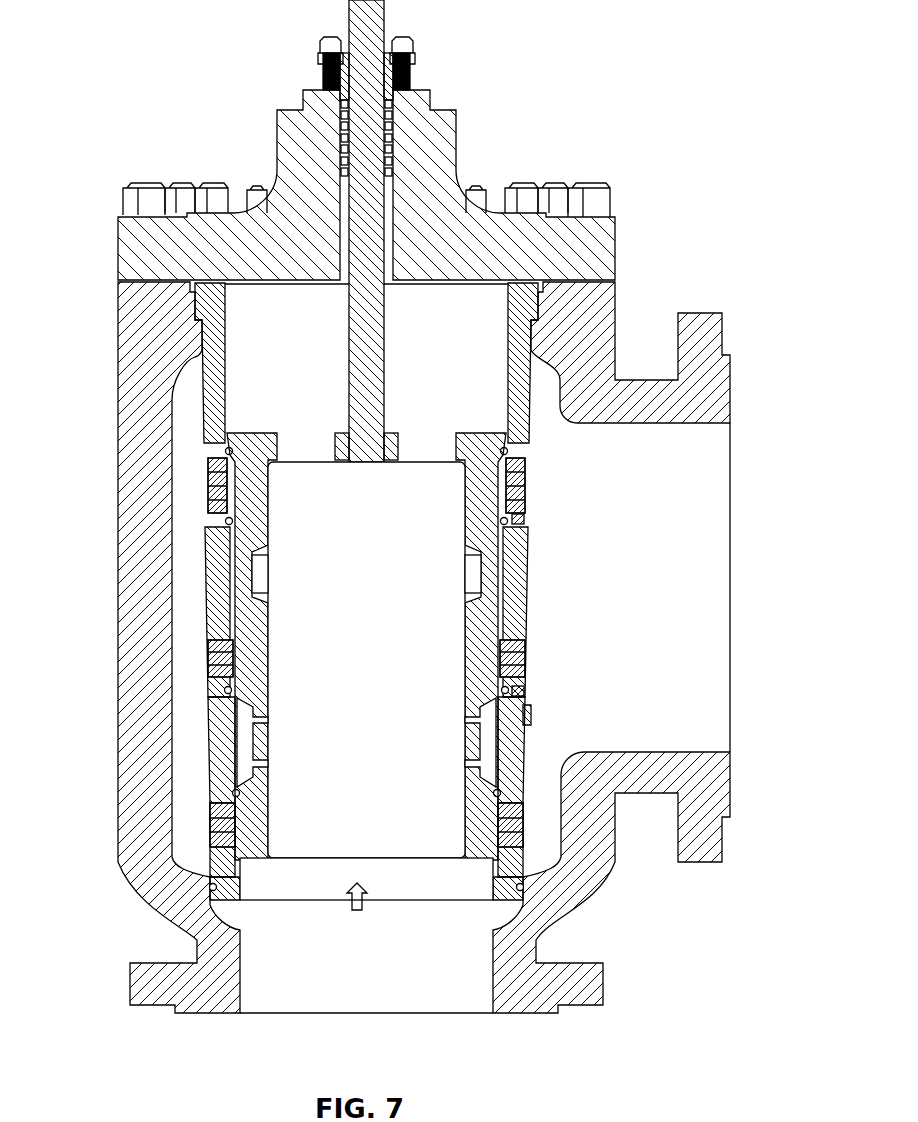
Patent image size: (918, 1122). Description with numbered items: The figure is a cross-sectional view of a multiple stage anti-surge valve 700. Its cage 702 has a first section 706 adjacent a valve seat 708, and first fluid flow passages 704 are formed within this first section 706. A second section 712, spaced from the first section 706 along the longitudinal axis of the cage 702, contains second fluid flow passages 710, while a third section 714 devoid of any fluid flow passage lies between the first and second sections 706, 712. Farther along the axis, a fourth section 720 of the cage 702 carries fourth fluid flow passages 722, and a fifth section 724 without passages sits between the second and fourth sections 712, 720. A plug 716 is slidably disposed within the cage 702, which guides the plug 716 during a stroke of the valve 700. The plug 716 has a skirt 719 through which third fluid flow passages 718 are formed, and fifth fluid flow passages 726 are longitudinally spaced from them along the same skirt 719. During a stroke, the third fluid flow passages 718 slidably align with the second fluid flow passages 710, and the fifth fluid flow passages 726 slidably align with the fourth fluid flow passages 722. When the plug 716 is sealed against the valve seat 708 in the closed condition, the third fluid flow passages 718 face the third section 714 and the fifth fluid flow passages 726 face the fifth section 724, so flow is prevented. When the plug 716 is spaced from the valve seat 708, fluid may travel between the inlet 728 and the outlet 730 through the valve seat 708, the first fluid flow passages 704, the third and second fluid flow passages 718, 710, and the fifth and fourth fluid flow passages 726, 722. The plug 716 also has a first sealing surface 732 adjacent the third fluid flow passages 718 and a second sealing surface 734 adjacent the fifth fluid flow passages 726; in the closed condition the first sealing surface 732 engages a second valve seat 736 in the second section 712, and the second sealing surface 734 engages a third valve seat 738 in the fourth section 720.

The multiple stage anti-surge valve 700 is at (425, 534).
The cage 702 is at (518, 597).
The first fluid flow passages 704 is at (522, 843).
The first section 706 is at (210, 835).
The valve seat 708 is at (467, 887).
The second fluid flow passages 710 is at (518, 656).
The second section 712 is at (210, 665).
The third section 714 is at (218, 747).
The plug 716 is at (253, 440).
The third fluid flow passages 718 is at (265, 745).
The skirt 719 is at (523, 718).
The fourth section 720 is at (208, 497).
The fourth fluid flow passages 722 is at (524, 470).
The fifth section 724 is at (210, 578).
The fifth fluid flow passages 726 is at (262, 575).
The inlet 728 is at (290, 1003).
The outlet 730 is at (722, 533).
The first sealing surface 732 is at (500, 688).
The second sealing surface 734 is at (504, 518).
The second valve seat 736 is at (523, 686).
The third valve seat 738 is at (524, 513).